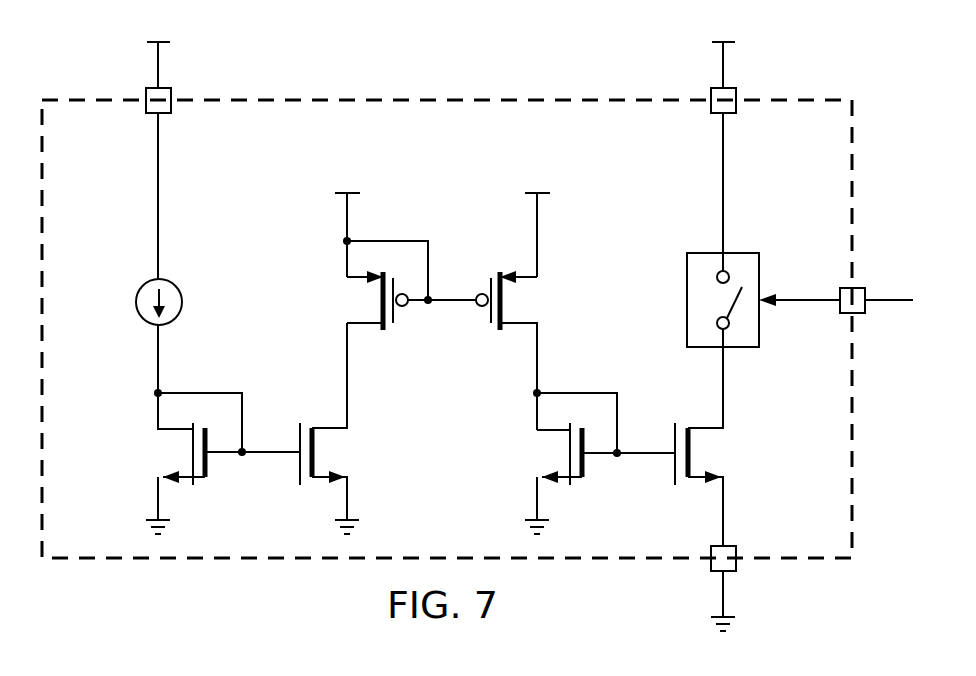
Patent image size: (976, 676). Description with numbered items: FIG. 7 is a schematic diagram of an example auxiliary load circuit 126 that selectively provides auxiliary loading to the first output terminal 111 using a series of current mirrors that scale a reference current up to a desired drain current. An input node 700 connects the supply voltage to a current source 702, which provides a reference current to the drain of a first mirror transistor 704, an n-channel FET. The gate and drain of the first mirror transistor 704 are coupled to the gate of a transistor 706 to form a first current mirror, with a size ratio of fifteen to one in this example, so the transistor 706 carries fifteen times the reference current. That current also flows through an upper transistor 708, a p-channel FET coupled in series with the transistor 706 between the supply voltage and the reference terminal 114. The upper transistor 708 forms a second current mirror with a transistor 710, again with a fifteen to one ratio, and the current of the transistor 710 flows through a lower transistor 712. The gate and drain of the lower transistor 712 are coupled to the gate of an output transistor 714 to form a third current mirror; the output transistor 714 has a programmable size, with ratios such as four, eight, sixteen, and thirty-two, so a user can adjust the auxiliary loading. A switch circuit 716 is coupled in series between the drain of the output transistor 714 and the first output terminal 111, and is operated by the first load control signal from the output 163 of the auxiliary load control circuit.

The auxiliary load circuit 126 is at (426, 92).
The input node 700 is at (158, 218).
The current source 702 is at (136, 298).
The first mirror transistor 704 is at (208, 467).
The transistor 706 is at (298, 440).
The upper transistor 708 is at (398, 318).
The transistor 710 is at (481, 292).
The lower transistor 712 is at (586, 468).
The output transistor 714 is at (672, 440).
The switch circuit 716 is at (687, 296).
The first output terminal 111 is at (723, 66).
The output of the auxiliary load control circuit 163 is at (887, 300).
The reference terminal 114 is at (158, 500).